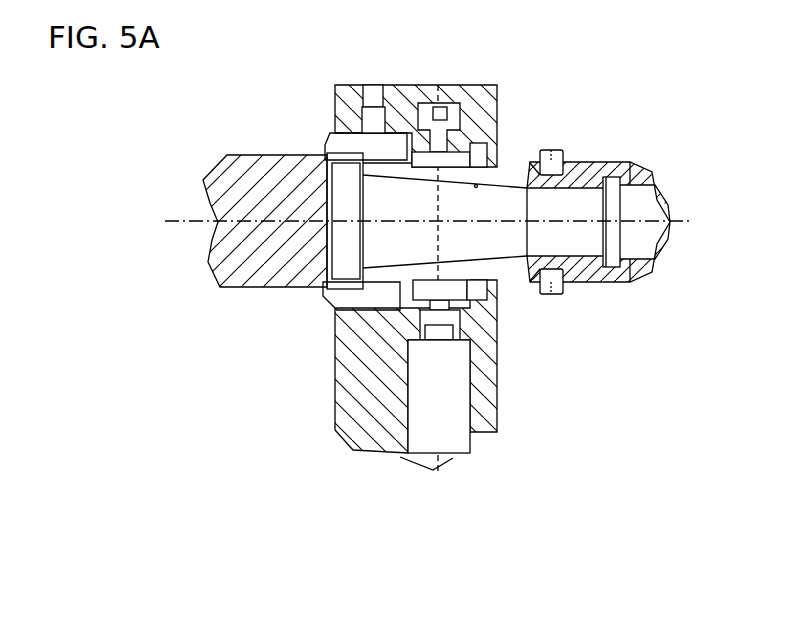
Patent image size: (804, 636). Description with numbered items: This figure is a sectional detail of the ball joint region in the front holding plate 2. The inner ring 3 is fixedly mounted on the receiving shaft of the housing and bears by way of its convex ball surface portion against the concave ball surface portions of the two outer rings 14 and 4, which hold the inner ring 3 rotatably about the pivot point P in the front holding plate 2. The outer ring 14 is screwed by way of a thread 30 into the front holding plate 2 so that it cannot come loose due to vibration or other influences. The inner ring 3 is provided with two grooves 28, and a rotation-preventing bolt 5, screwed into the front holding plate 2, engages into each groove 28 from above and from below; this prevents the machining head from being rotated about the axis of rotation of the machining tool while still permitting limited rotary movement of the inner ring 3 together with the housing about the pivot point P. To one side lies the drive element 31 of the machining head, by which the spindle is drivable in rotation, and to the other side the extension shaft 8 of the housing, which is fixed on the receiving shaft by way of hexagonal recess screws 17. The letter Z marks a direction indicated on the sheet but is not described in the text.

The front holding plate 2 is at (486, 373).
The inner ring 3 is at (441, 168).
The outer ring 4 is at (438, 221).
The rotation-preventing bolt 5 is at (452, 147).
The extension shaft 8 is at (613, 273).
The outer ring 14 is at (347, 150).
The hexagonal recess screw 17 is at (557, 297).
The groove 28 is at (415, 298).
The thread 30 is at (413, 147).
The drive element 31 is at (238, 253).
The pivot point P is at (477, 188).
The axis Z is at (198, 422).